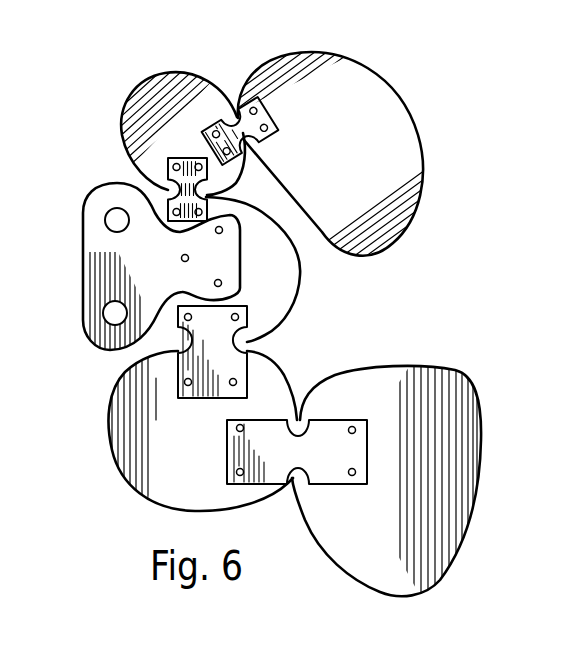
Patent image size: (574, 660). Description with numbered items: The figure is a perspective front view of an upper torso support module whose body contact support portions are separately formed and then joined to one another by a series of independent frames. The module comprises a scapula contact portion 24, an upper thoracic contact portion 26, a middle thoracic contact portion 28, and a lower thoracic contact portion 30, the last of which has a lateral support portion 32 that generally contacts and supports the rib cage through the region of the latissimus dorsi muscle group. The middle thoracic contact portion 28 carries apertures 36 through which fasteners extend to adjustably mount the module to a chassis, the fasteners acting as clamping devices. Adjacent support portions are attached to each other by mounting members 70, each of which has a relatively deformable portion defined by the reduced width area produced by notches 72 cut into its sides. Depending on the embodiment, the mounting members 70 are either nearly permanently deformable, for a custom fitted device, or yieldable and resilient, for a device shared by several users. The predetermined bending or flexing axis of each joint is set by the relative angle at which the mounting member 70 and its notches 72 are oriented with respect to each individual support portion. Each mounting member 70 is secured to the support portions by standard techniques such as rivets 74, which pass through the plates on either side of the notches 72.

The scapula contact portion 24 is at (380, 106).
The upper thoracic contact portion 26 is at (195, 95).
The middle thoracic contact portion 28 is at (202, 271).
The lower thoracic contact portion 30 is at (177, 497).
The lateral support portion 32 is at (473, 380).
The apertures 36 is at (110, 222).
The mounting members 70 is at (250, 321).
The notches 72 is at (246, 355).
The rivets 74 is at (232, 387).